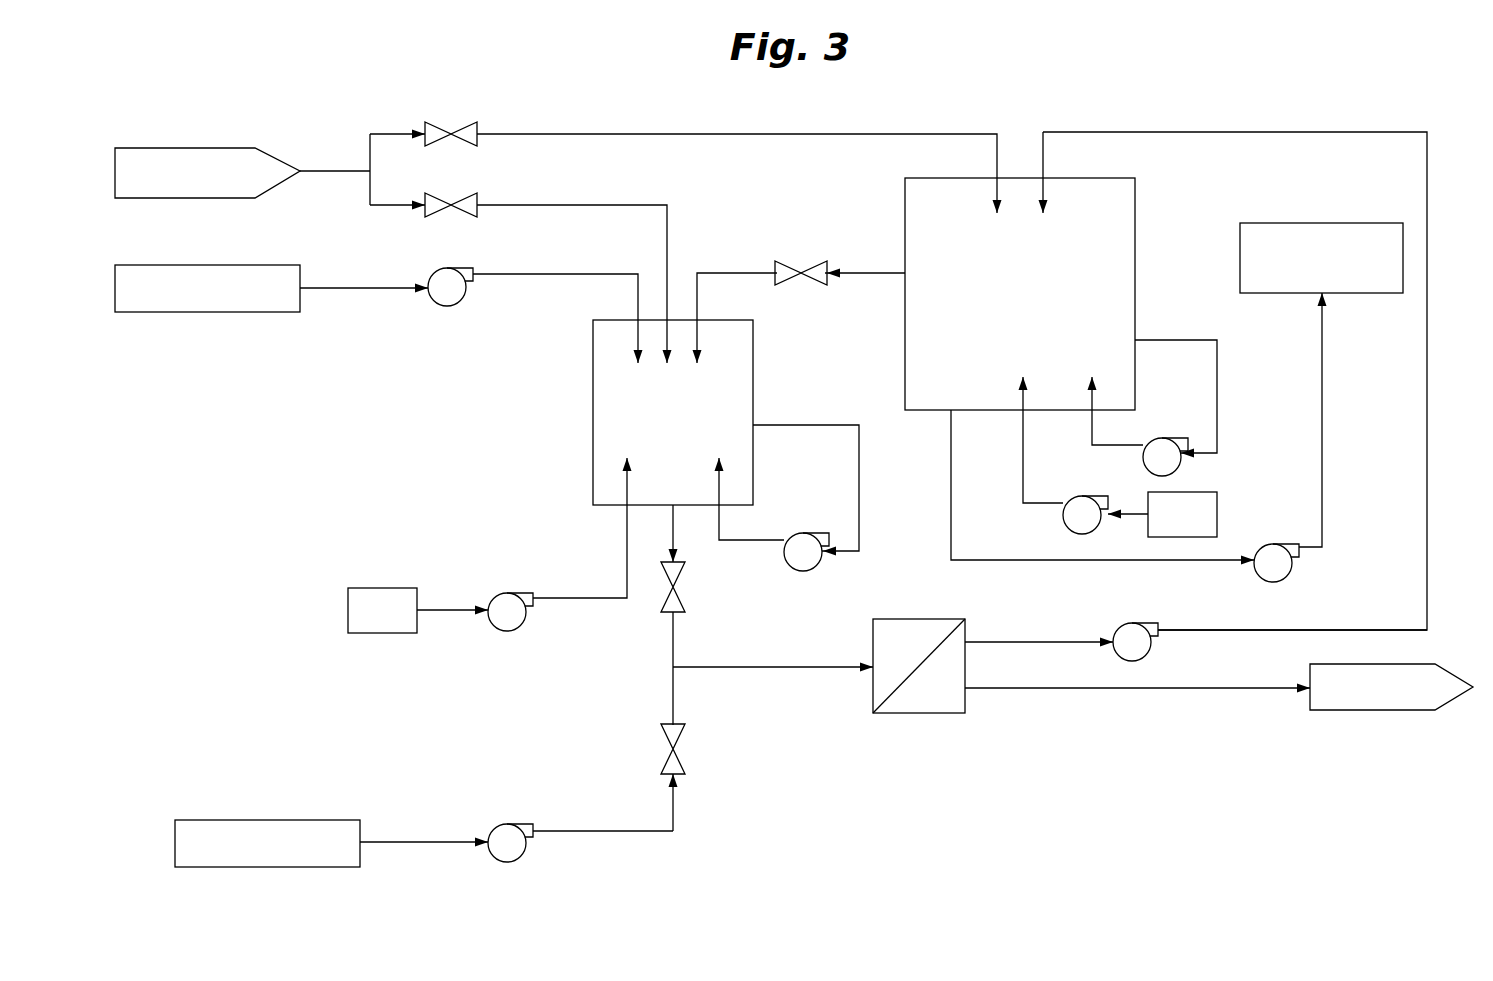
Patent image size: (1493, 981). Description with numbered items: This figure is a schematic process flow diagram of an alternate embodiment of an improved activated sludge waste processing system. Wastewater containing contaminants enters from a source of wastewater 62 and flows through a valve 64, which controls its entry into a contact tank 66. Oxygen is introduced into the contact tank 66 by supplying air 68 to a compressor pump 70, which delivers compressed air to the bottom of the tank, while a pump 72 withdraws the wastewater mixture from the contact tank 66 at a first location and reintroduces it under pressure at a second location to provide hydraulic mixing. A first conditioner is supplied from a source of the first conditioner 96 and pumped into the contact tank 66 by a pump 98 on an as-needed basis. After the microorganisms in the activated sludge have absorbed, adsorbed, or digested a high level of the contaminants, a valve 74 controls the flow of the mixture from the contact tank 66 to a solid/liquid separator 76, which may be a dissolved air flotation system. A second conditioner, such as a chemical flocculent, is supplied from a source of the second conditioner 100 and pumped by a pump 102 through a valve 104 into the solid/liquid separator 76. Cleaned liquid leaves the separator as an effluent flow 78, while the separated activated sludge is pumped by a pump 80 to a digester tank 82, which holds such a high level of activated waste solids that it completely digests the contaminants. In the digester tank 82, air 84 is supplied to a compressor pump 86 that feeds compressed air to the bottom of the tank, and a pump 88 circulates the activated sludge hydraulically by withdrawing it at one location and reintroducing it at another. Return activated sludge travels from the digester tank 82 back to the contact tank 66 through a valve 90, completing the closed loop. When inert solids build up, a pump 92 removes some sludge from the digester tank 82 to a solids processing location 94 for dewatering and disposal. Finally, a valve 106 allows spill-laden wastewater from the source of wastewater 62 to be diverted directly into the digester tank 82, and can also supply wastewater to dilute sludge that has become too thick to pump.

The source of wastewater 62 is at (165, 148).
The valve 106 is at (442, 124).
The valve 64 is at (440, 193).
The source of the first conditioner 96 is at (210, 265).
The pump 98 is at (454, 268).
The valve 90 is at (793, 273).
The digester tank 82 is at (905, 338).
The solids processing location 94 is at (1322, 223).
The pump 88 is at (1157, 436).
The compressor pump 86 is at (1082, 494).
The air 84 is at (1217, 515).
The pump 92 is at (1275, 582).
The contact tank 66 is at (580, 383).
The pump 72 is at (803, 572).
The valve 74 is at (683, 595).
The valve 104 is at (685, 752).
The air 68 is at (383, 588).
The compressor pump 70 is at (513, 592).
The source of the second conditioner 100 is at (272, 820).
The pump 102 is at (513, 823).
The solid/liquid separator 76 is at (917, 619).
The pump 80 is at (1135, 622).
The effluent flow 78 is at (1448, 672).